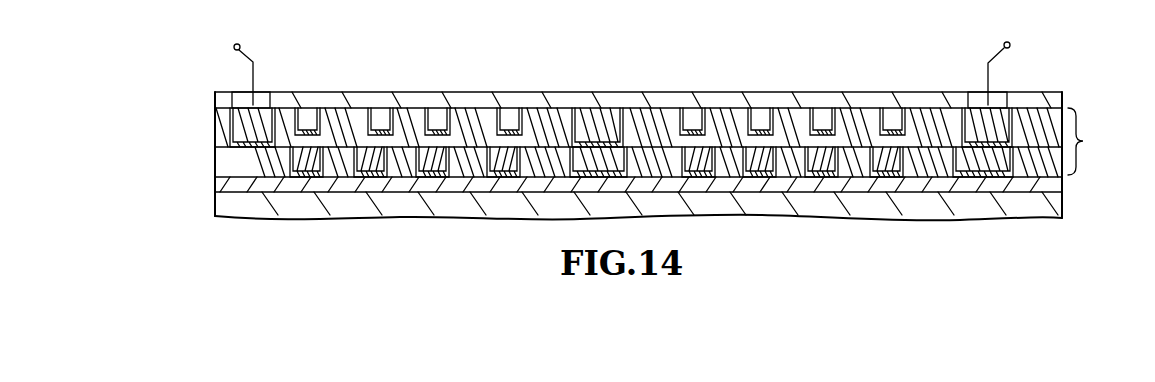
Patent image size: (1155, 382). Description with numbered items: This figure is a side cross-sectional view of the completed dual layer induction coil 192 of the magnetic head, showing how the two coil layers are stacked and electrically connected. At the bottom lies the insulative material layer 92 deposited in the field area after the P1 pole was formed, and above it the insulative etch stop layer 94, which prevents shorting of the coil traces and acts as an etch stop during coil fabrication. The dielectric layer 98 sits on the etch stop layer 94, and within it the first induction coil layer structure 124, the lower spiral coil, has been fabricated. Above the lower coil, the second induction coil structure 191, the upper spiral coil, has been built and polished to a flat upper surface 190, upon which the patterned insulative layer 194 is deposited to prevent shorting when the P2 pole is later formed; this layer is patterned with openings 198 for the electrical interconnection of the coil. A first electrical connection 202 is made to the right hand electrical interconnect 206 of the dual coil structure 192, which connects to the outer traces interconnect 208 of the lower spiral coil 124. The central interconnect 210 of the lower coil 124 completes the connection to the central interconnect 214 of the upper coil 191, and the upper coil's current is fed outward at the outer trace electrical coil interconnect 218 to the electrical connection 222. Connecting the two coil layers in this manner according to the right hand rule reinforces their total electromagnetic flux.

The insulative material layer 92 is at (213, 202).
The insulative etch stop layer 94 is at (213, 189).
The dielectric layer 98 is at (213, 159).
The first induction coil layer structure 124 is at (770, 163).
The flat upper surface 190 is at (476, 97).
The second induction coil structure 191 is at (390, 118).
The dual layer induction coil 192 is at (1096, 141).
The patterned insulative layer 194 is at (678, 92).
The openings 198 is at (243, 91).
The first electrical connection 202 is at (1010, 45).
The right hand electrical interconnect 206 is at (1013, 110).
The outer traces interconnect 208 is at (1013, 160).
The central interconnect 210 is at (585, 155).
The central interconnect 214 is at (613, 113).
The outer trace electrical coil interconnect 218 is at (243, 120).
The electrical connection 222 is at (234, 46).